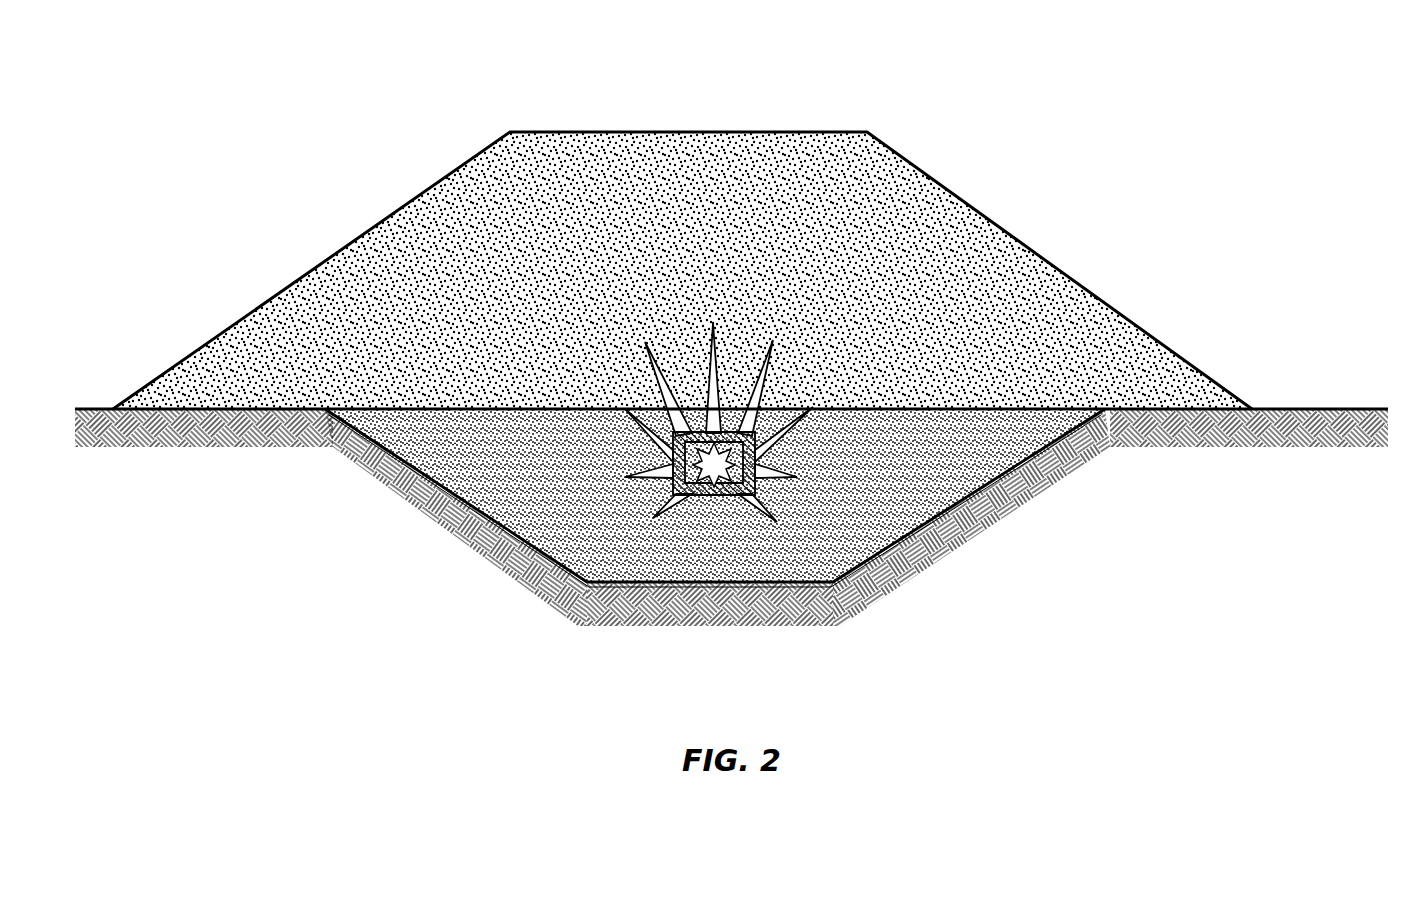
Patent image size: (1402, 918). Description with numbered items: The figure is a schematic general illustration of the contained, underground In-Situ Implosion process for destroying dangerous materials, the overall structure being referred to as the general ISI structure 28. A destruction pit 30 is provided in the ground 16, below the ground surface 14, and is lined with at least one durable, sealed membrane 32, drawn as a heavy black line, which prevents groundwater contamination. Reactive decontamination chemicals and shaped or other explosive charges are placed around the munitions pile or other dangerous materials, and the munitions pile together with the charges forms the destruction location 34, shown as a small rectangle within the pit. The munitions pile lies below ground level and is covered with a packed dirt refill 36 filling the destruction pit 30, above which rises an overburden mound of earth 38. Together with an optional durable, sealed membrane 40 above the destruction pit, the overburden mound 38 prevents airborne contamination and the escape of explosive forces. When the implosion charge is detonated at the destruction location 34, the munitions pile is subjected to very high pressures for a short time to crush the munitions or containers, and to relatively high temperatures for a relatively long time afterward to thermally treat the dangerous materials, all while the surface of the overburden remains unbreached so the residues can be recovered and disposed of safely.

The ground surface 14 is at (731, 390).
The ground 16 is at (1290, 568).
The general ISI structure 28 is at (682, 379).
The destruction pit 30 is at (715, 525).
The durable, sealed membrane 32 is at (717, 541).
The destruction location 34 is at (719, 442).
The packed dirt refill 36 is at (931, 475).
The overburden mound of earth 38 is at (931, 342).
The durable, sealed membrane 40 is at (682, 270).